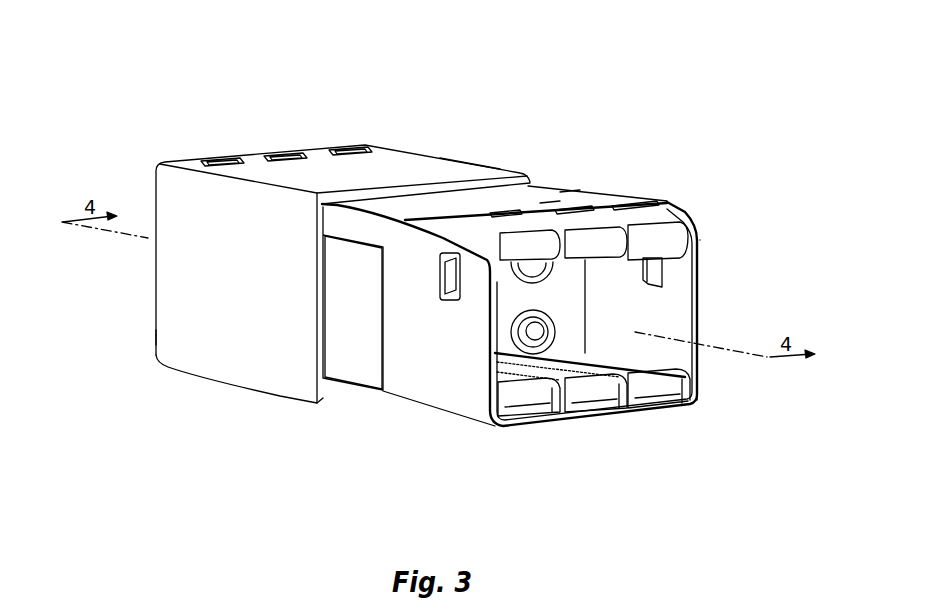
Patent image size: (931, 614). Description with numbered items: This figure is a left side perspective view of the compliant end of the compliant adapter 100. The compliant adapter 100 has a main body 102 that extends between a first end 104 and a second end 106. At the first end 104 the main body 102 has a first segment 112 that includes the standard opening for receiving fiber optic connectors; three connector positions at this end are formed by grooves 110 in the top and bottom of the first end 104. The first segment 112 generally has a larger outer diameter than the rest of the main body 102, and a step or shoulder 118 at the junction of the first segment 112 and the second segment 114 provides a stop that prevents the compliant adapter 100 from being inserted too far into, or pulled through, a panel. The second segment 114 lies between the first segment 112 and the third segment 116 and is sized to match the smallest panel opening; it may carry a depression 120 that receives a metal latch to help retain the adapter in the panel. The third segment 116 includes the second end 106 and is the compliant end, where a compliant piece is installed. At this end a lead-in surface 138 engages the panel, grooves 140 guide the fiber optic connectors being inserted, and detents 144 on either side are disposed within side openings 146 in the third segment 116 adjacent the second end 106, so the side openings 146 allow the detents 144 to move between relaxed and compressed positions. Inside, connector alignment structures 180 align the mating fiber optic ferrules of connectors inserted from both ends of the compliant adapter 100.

The compliant adapter 100 is at (403, 82).
The main body 102 is at (290, 401).
The first end 104 is at (148, 337).
The second end 106 is at (708, 412).
The grooves 110 is at (516, 410).
The first segment 112 is at (467, 163).
The second segment 114 is at (570, 190).
The third segment 116 is at (425, 414).
The shoulder 118 is at (550, 198).
The depression 120 is at (368, 316).
The lead-in surface 138 is at (670, 210).
The grooves 140 is at (673, 240).
The detents 144 is at (453, 257).
The side openings 146 is at (450, 301).
The connector alignment structures 180 is at (560, 303).